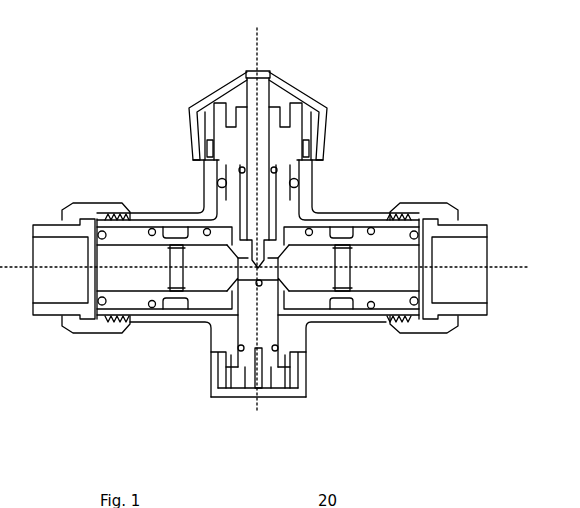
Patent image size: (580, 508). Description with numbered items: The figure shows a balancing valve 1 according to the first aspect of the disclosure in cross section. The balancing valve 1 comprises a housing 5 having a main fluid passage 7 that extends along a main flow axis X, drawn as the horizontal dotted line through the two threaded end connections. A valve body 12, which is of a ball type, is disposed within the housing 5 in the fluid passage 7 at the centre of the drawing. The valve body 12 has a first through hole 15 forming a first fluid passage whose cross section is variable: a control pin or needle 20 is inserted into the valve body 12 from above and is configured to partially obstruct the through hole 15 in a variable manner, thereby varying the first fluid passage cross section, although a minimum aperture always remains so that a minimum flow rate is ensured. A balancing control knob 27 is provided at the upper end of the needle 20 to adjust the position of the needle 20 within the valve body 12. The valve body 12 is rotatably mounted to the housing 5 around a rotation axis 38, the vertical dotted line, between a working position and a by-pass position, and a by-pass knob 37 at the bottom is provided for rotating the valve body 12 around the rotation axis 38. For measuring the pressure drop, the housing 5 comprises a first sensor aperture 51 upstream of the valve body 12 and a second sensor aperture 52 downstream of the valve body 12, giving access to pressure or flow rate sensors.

The balancing valve 1 is at (98, 59).
The housing 5 is at (150, 318).
The main fluid passage 7 is at (398, 257).
The valve body 12 is at (170, 177).
The first through hole 15 is at (263, 275).
The control pin or needle 20 is at (264, 200).
The balancing control knob 27 is at (321, 107).
The by-pass knob 37 is at (228, 400).
The rotation axis 38 is at (250, 42).
The first sensor aperture 51 is at (173, 278).
The second sensor aperture 52 is at (345, 282).